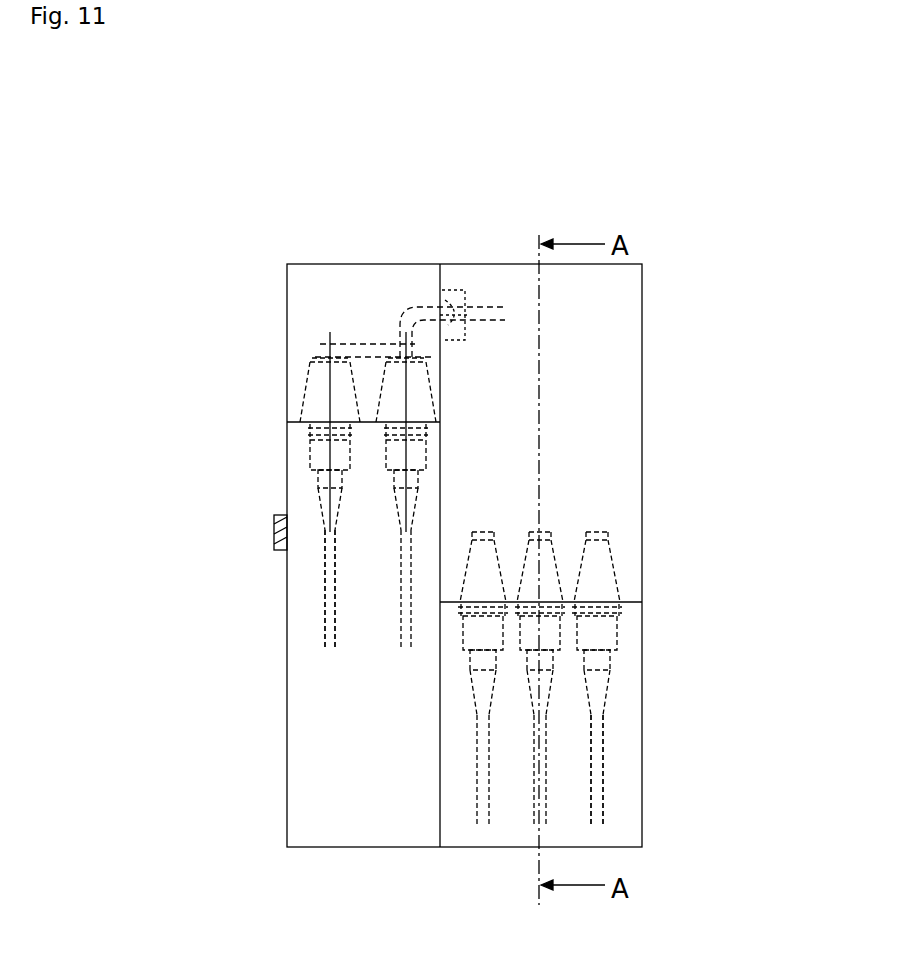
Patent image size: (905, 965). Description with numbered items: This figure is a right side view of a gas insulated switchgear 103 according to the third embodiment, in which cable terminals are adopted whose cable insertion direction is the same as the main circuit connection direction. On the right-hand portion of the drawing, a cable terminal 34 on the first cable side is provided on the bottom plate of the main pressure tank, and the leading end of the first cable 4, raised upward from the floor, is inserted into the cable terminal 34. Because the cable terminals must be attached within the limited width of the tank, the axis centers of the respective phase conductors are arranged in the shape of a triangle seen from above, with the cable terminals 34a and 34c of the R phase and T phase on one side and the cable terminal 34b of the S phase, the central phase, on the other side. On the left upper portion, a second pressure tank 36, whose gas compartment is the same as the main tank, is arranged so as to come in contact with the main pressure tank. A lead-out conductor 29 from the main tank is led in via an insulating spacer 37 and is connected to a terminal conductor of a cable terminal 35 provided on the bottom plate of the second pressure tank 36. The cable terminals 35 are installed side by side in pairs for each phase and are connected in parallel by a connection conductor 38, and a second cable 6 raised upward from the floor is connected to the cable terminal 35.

The gas insulated switchgear 103 is at (103, 141).
The second pressure tank 36 is at (318, 317).
The cable terminal 34 is at (477, 573).
The connection conductor 38 is at (363, 344).
The lead-out conductor 29 is at (498, 307).
The insulating spacer 37 is at (450, 297).
The cable terminal 35 is at (320, 400).
The second cable 6 is at (325, 580).
The cable terminal of R phase 34a is at (503, 550).
The cable terminal of S phase 34b is at (558, 550).
The cable terminal of T phase 34c is at (615, 550).
The first cable 4 is at (602, 750).